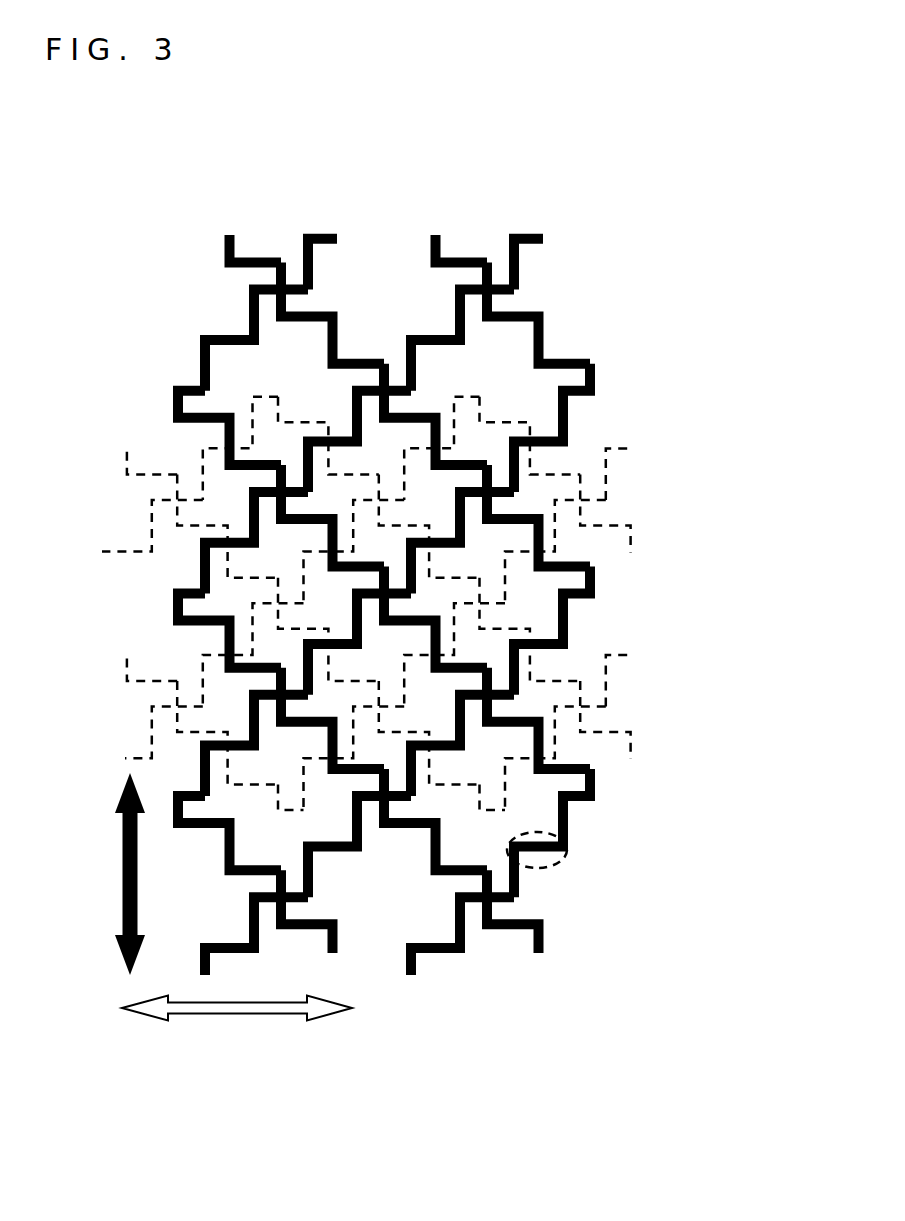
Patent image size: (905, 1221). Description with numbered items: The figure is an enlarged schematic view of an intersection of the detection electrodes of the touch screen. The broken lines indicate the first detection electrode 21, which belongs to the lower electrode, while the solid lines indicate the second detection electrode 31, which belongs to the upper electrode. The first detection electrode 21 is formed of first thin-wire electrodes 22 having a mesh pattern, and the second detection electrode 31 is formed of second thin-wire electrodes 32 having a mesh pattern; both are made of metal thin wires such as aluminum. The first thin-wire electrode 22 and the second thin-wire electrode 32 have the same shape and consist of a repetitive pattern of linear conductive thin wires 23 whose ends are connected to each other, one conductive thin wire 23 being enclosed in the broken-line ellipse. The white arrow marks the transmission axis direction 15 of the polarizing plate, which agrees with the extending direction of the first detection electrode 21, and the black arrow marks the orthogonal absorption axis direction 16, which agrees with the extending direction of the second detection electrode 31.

The transmission axis direction 15 is at (355, 1009).
The absorption axis direction 16 is at (127, 975).
The first detection electrode 21 is at (680, 405).
The first thin-wire electrode 22 is at (612, 441).
The conductive thin wire 23 is at (550, 865).
The second detection electrode 31 is at (563, 238).
The second thin-wire electrode 32 is at (543, 327).